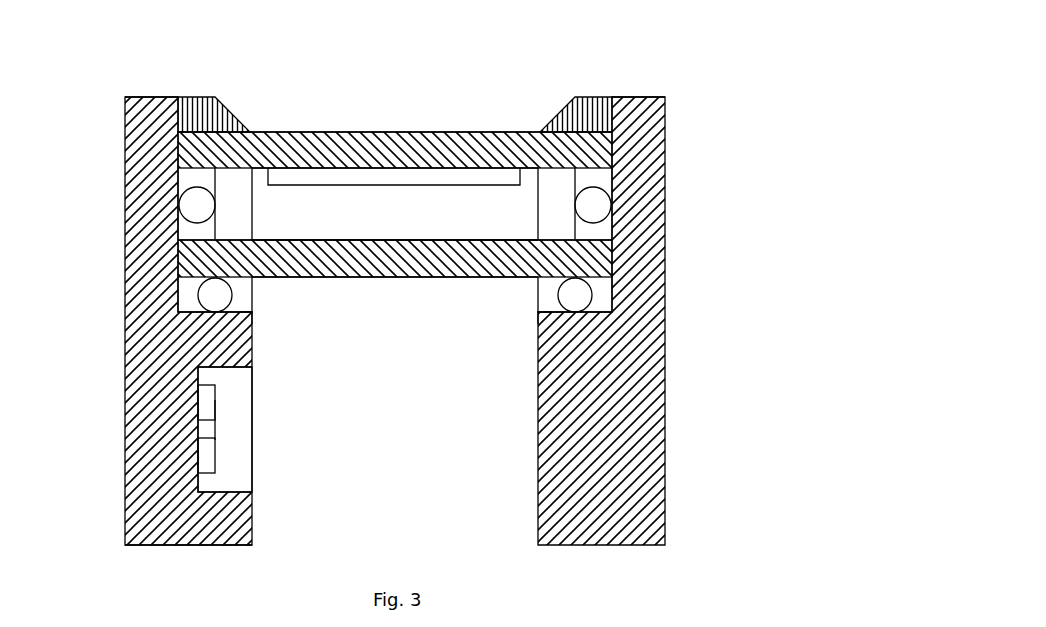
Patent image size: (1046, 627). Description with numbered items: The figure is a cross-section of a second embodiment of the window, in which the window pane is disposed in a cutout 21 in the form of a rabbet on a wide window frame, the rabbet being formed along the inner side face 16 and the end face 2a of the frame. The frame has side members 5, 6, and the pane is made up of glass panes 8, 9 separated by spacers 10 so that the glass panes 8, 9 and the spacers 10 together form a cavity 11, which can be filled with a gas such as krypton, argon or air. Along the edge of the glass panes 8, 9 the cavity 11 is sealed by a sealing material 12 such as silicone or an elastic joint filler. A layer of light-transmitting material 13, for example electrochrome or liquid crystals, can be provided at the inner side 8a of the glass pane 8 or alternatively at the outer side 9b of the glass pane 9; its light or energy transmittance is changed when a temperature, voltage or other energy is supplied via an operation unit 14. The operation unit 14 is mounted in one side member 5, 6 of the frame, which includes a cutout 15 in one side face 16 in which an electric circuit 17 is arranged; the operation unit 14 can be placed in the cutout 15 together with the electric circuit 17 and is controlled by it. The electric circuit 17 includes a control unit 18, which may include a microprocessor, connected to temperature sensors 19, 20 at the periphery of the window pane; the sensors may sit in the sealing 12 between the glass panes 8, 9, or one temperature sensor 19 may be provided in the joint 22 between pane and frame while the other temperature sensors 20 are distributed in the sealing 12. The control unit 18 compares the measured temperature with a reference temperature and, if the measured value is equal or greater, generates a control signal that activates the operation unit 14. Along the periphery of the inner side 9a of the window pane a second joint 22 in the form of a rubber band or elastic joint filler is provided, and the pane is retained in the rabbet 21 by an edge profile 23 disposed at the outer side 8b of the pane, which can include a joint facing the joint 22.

The end face 2a is at (147, 98).
The side member 5 is at (138, 328).
The side member 6 is at (650, 427).
The glass pane 8 is at (188, 157).
The inner side of glass pane 8a is at (490, 172).
The outer side of window pane 8b is at (422, 132).
The glass pane 9 is at (338, 268).
The inner side of window pane 9a is at (390, 240).
The outer side of glass pane 9b is at (478, 278).
The spacer 10 is at (232, 177).
The cavity 11 is at (360, 207).
The sealing material 12 is at (185, 230).
The light-transmitting material layer 13 is at (300, 177).
The operation unit 14 is at (207, 402).
The cutout 15 is at (242, 457).
The side face 16 is at (252, 523).
The electric circuit 17 is at (223, 415).
The control unit 18 is at (207, 455).
The temperature sensor 19 is at (225, 292).
The temperature sensor 20 is at (193, 202).
The cutout in the form of rabbet 21 is at (237, 318).
The second joint 22 is at (188, 297).
The edge profile 23 is at (193, 117).